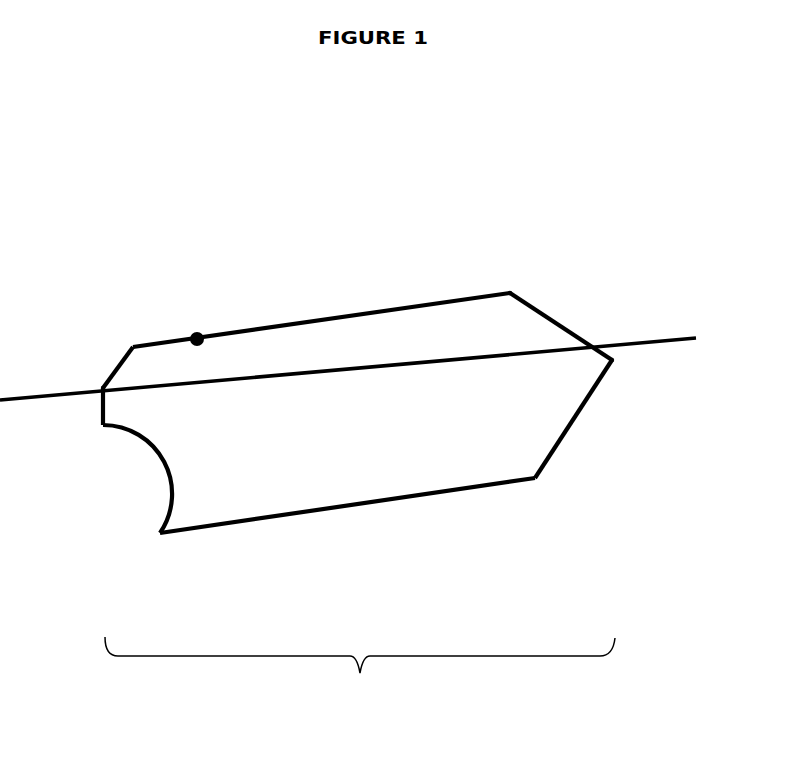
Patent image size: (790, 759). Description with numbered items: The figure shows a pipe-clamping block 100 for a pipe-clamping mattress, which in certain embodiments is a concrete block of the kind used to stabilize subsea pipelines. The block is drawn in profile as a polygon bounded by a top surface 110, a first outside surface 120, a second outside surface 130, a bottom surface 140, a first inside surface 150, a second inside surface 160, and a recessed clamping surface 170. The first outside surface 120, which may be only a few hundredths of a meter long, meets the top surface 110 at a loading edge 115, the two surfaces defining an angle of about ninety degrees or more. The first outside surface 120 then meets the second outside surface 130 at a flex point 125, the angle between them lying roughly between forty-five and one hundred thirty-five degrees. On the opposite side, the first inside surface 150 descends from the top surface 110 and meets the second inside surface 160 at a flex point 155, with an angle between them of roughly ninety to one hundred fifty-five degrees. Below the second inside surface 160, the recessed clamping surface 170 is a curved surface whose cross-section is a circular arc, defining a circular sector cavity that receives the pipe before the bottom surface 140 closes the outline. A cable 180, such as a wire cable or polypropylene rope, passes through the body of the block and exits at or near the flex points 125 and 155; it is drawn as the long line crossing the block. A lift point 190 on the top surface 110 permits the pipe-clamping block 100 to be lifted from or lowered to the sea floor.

The pipe-clamping block 100 is at (360, 677).
The top surface 110 is at (305, 313).
The loading edge 115 is at (515, 282).
The first outside surface 120 is at (577, 323).
The flex point 125 is at (615, 363).
The second outside surface 130 is at (592, 418).
The bottom surface 140 is at (416, 502).
The first inside surface 150 is at (113, 353).
The flex point 155 is at (97, 380).
The second inside surface 160 is at (95, 417).
The recessed clamping surface 170 is at (148, 477).
The cable 180 is at (658, 335).
The lift point 190 is at (192, 322).